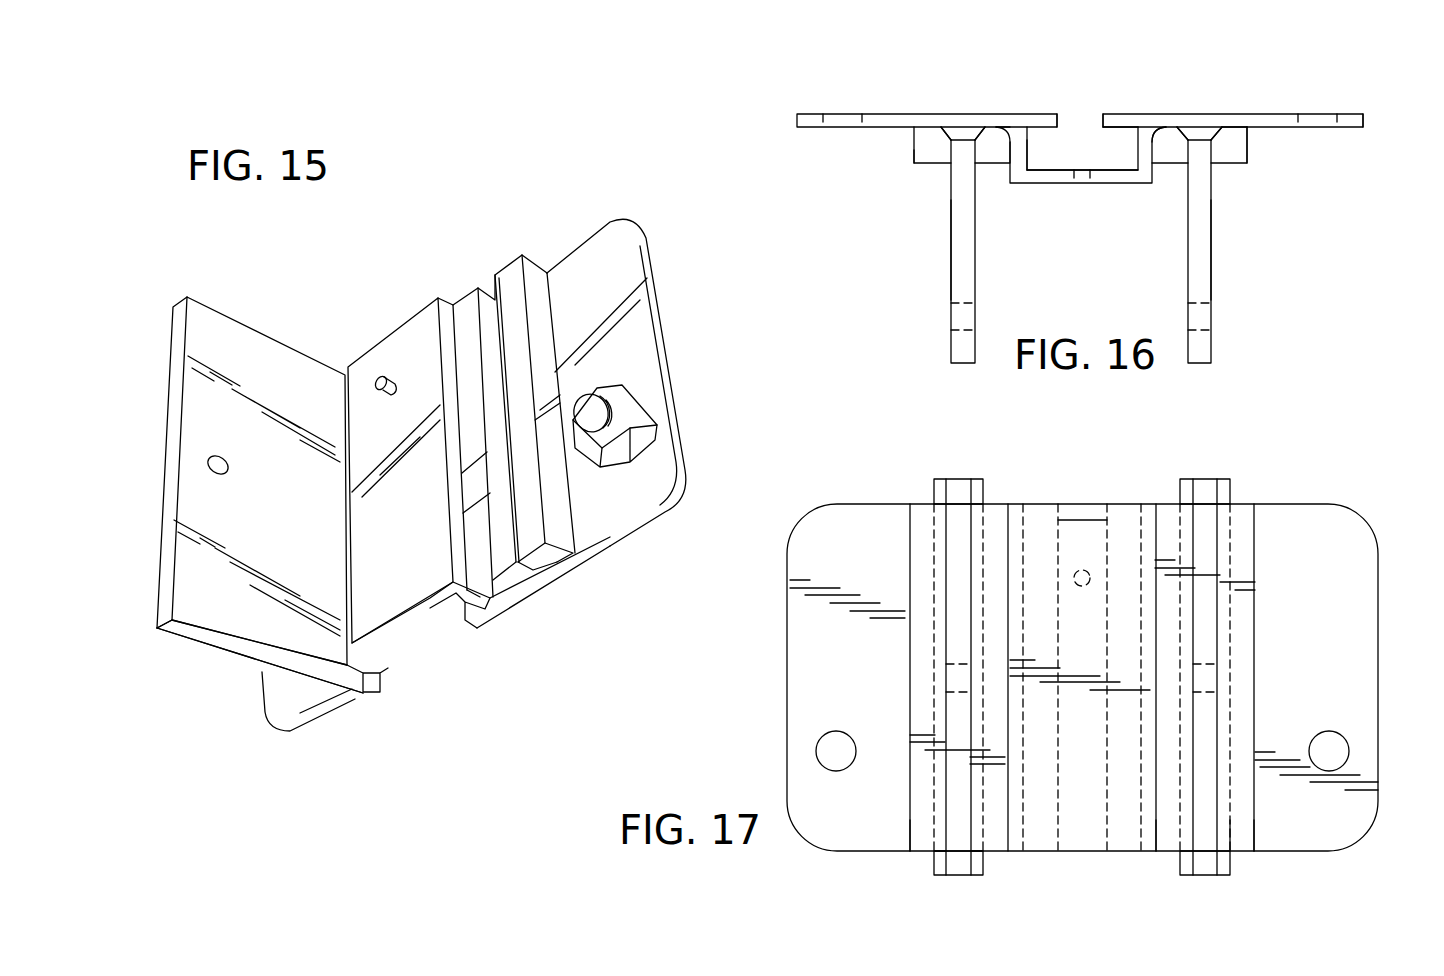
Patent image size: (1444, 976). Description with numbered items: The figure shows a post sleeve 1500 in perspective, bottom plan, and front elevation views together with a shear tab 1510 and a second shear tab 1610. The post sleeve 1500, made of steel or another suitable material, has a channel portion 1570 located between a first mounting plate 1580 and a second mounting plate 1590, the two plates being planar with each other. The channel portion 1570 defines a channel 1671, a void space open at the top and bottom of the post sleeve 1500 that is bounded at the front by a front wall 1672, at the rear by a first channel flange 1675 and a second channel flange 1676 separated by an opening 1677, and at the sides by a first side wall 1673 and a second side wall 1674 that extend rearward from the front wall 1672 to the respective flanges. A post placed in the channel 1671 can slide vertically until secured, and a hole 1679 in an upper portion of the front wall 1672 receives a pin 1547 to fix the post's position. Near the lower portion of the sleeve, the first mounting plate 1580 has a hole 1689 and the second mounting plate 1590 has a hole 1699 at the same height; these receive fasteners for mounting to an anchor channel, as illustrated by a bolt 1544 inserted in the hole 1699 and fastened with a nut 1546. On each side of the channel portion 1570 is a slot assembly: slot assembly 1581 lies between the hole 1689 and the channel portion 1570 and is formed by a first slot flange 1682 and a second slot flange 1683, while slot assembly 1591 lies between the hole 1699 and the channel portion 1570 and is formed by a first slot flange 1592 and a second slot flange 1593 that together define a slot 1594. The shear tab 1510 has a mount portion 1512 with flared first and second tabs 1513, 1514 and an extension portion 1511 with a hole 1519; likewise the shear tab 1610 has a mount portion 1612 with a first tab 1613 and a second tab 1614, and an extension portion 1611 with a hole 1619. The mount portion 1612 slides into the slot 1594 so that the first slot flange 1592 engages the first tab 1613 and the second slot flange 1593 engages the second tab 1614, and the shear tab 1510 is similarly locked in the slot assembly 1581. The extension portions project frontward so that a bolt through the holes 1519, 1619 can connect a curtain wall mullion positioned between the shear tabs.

In FIG. 15, the post sleeve 1500 is at (637, 219).
In FIG. 16, the post sleeve 1500 is at (1312, 147).
In FIG. 17, the post sleeve 1500 is at (786, 591).
In FIG. 15, the shear tab 1510 is at (187, 297).
In FIG. 16, the shear tab 1510 is at (947, 360).
In FIG. 17, the shear tab 1510 is at (977, 485).
In FIG. 15, the extension portion 1511 is at (210, 606).
In FIG. 16, the extension portion 1511 is at (951, 250).
In FIG. 15, the mount portion 1512 is at (363, 697).
In FIG. 16, the mount portion 1512 is at (962, 126).
In FIG. 15, the first tab 1513 is at (340, 716).
In FIG. 16, the first tab 1513 is at (945, 130).
In FIG. 17, the first tab 1513 is at (940, 860).
In FIG. 15, the second tab 1514 is at (380, 694).
In FIG. 16, the second tab 1514 is at (979, 128).
In FIG. 17, the second tab 1514 is at (978, 862).
In FIG. 15, the hole 1519 is at (224, 471).
In FIG. 16, the hole 1519 is at (956, 317).
In FIG. 17, the hole 1519 is at (950, 676).
In FIG. 15, the bolt 1544 is at (593, 403).
In FIG. 15, the nut 1546 is at (638, 413).
In FIG. 15, the pin 1547 is at (378, 378).
In FIG. 15, the channel portion 1570 is at (414, 310).
In FIG. 16, the channel portion 1570 is at (1076, 212).
In FIG. 17, the channel portion 1570 is at (1112, 503).
In FIG. 15, the first mounting plate 1580 is at (276, 712).
In FIG. 16, the first mounting plate 1580 is at (800, 120).
In FIG. 17, the first mounting plate 1580 is at (826, 530).
In FIG. 15, the slot assembly 1581 is at (370, 666).
In FIG. 16, the slot assembly 1581 is at (906, 164).
In FIG. 17, the slot assembly 1581 is at (918, 855).
In FIG. 15, the second mounting plate 1590 is at (590, 258).
In FIG. 16, the second mounting plate 1590 is at (1352, 125).
In FIG. 17, the second mounting plate 1590 is at (1340, 540).
In FIG. 15, the slot assembly 1591 is at (483, 278).
In FIG. 16, the slot assembly 1591 is at (1254, 167).
In FIG. 17, the slot assembly 1591 is at (1255, 861).
In FIG. 15, the first slot flange 1592 is at (500, 592).
In FIG. 16, the first slot flange 1592 is at (1151, 132).
In FIG. 17, the first slot flange 1592 is at (1165, 843).
In FIG. 15, the second slot flange 1593 is at (556, 568).
In FIG. 16, the second slot flange 1593 is at (1242, 126).
In FIG. 17, the second slot flange 1593 is at (1243, 849).
In FIG. 15, the slot 1594 is at (532, 577).
In FIG. 16, the shear tab 1610 is at (1214, 362).
In FIG. 17, the shear tab 1610 is at (1236, 482).
In FIG. 16, the extension portion 1611 is at (1204, 276).
In FIG. 16, the mount portion 1612 is at (1195, 131).
In FIG. 16, the first tab 1613 is at (1179, 135).
In FIG. 17, the first tab 1613 is at (1190, 486).
In FIG. 16, the second tab 1614 is at (1216, 130).
In FIG. 17, the second tab 1614 is at (1238, 492).
In FIG. 16, the hole 1619 is at (1206, 318).
In FIG. 17, the hole 1619 is at (1210, 676).
In FIG. 16, the channel 1671 is at (1037, 167).
In FIG. 16, the front wall 1672 is at (1053, 180).
In FIG. 17, the front wall 1672 is at (1083, 520).
In FIG. 16, the first side wall 1673 is at (1017, 152).
In FIG. 16, the second side wall 1674 is at (1145, 153).
In FIG. 16, the first channel flange 1675 is at (1001, 125).
In FIG. 16, the second channel flange 1676 is at (1110, 127).
In FIG. 16, the opening 1677 is at (1080, 126).
In FIG. 16, the hole 1679 is at (1084, 190).
In FIG. 17, the hole 1679 is at (1073, 578).
In FIG. 16, the first slot flange 1682 is at (913, 141).
In FIG. 17, the first slot flange 1682 is at (918, 812).
In FIG. 16, the second slot flange 1683 is at (1000, 138).
In FIG. 17, the second slot flange 1683 is at (997, 716).
In FIG. 16, the hole 1689 is at (842, 125).
In FIG. 17, the hole 1689 is at (828, 745).
In FIG. 16, the hole 1699 is at (1330, 125).
In FIG. 17, the hole 1699 is at (1329, 736).